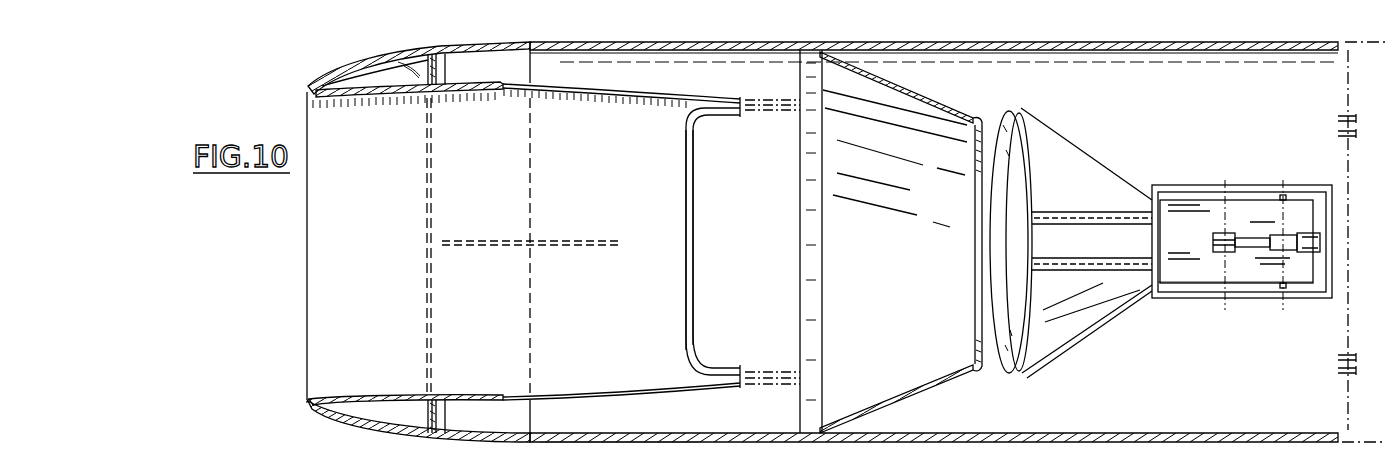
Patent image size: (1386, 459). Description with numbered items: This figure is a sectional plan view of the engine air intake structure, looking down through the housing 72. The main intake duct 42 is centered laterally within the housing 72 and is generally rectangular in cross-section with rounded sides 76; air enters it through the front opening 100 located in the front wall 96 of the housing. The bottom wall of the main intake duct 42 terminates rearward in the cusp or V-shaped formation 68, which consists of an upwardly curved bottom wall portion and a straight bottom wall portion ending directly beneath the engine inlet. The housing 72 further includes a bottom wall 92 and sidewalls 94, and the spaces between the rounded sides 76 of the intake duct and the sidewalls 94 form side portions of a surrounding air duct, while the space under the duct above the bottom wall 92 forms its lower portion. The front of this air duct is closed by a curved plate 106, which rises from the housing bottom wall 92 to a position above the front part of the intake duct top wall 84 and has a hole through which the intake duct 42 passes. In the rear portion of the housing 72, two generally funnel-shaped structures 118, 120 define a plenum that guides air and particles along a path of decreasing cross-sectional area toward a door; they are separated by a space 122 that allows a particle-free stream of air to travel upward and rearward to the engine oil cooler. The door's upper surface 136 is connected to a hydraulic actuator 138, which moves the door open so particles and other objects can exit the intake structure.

The main intake duct 42 is at (480, 250).
The cusp or V-shaped formation 68 is at (697, 256).
The housing 72 is at (623, 36).
The rounded sides 76 is at (494, 96).
The top wall of main intake duct 84 is at (537, 443).
The bottom wall of housing 92 is at (683, 70).
The sidewalls of housing 94 is at (520, 42).
The front wall of housing 96 is at (312, 403).
The front opening 100 is at (306, 303).
The curved plate 106 is at (420, 72).
The funnel-shaped structure 118 is at (947, 104).
The funnel-shaped structure 120 is at (1067, 140).
The space 122 is at (995, 117).
The upper surface of door 136 is at (1178, 228).
The hydraulic actuator 138 is at (1270, 233).